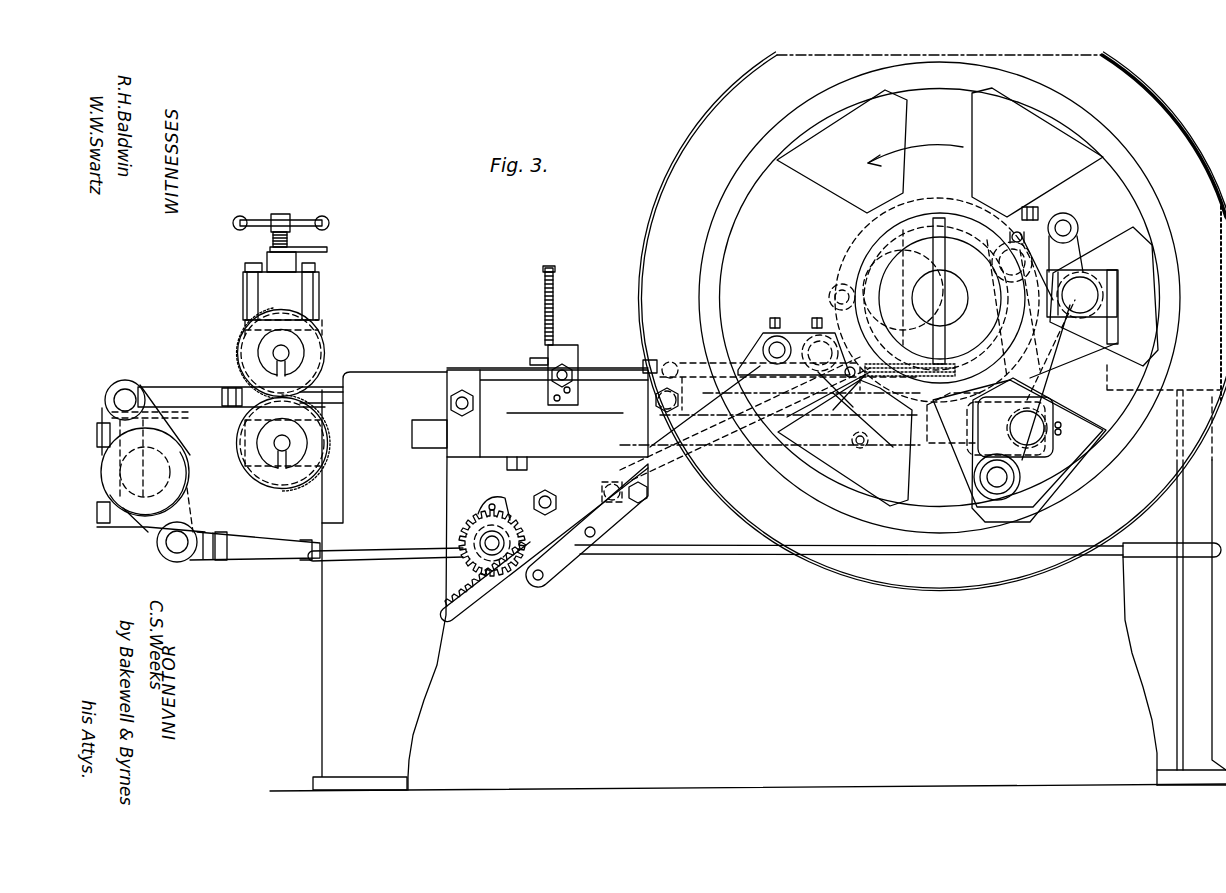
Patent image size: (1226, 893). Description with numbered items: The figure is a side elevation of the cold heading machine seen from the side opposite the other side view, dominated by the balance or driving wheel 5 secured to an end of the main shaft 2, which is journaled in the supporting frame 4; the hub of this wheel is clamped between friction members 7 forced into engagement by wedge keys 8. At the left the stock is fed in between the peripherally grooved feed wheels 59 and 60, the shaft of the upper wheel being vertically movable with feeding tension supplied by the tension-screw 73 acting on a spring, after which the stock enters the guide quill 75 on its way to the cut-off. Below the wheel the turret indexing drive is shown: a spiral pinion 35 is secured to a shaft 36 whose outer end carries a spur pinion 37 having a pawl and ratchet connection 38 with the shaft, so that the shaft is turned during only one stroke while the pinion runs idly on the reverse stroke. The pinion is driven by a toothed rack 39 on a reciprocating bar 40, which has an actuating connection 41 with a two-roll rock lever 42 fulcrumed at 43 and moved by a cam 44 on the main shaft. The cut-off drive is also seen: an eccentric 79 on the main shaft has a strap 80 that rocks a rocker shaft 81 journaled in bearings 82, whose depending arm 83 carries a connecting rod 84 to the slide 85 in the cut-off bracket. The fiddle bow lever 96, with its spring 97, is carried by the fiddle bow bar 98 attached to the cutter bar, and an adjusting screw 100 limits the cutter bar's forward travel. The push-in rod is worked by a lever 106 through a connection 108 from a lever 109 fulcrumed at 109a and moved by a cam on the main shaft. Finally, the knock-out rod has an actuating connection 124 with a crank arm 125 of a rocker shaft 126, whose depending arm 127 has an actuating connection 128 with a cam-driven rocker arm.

The main shaft 2 is at (940, 298).
The supporting frame 4 is at (757, 545).
The balance or driving wheel 5 is at (933, 321).
The friction members 7 is at (940, 298).
The wedge keys 8 is at (943, 265).
The spiral pinion 35 is at (458, 566).
The shaft 36 is at (462, 582).
The spur pinion 37 is at (470, 540).
The pawl and ratchet connection 38 is at (489, 506).
The toothed rack 39 is at (500, 590).
The reciprocating bar 40 is at (620, 522).
The actuating connection 41 is at (667, 457).
The two-roll rock lever 42 is at (962, 447).
The fulcrum 43 is at (990, 480).
The cam 44 is at (834, 297).
The upper feed wheel 59 is at (248, 343).
The lower feed wheel 60 is at (262, 470).
The tension-screw 73 is at (282, 216).
The guide quill 75 is at (335, 380).
The eccentric 79 is at (1008, 248).
The strap 80 is at (1036, 222).
The rocker shaft 81 is at (1088, 283).
The bearings 82 is at (1100, 300).
The depending arm 83 is at (1082, 330).
The connecting rod 84 is at (884, 433).
The slide 85 is at (430, 440).
The fiddle bow lever 96 is at (555, 270).
The spring 97 is at (553, 308).
The fiddle bow bar 98 is at (552, 348).
The adjusting screw 100 is at (574, 372).
The lever 106 is at (652, 366).
The connection 108 is at (738, 366).
The lever 109 is at (830, 324).
The fulcrum 109a is at (860, 445).
The actuating connection 124 is at (240, 398).
The crank arm 125 is at (105, 407).
The rocker shaft 126 is at (107, 470).
The depending arm 127 is at (158, 530).
The actuating connection 128 is at (288, 560).